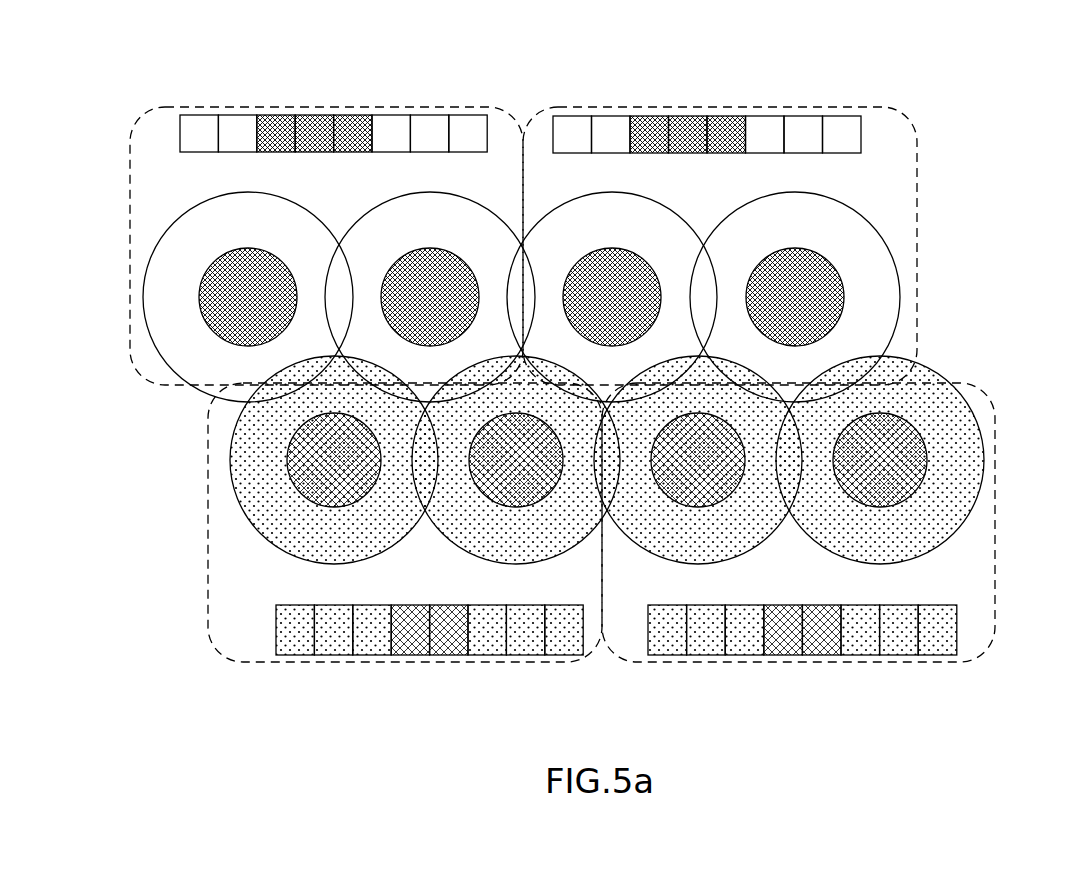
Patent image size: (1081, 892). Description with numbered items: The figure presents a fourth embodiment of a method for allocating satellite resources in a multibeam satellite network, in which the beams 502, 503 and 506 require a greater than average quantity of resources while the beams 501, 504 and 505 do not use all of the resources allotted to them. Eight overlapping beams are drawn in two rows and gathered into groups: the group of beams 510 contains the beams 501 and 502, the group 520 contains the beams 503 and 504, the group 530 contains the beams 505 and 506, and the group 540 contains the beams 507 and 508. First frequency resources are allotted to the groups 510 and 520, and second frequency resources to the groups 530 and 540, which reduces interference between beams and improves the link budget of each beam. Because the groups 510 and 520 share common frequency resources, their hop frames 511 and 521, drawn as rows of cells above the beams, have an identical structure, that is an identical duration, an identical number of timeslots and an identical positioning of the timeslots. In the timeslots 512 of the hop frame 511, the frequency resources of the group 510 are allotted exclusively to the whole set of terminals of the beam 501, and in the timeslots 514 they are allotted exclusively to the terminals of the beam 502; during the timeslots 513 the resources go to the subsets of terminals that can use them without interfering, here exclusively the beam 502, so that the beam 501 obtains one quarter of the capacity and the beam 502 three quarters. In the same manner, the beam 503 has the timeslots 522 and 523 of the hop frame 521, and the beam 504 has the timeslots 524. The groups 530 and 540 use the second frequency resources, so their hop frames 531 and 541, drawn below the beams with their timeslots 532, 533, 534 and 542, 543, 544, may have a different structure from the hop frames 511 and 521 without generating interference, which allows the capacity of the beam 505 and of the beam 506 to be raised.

The beam 501 is at (278, 196).
The beam 502 is at (460, 196).
The beam 503 is at (640, 196).
The beam 504 is at (822, 196).
The beam 505 is at (362, 560).
The beam 506 is at (512, 565).
The beam 507 is at (714, 563).
The beam 508 is at (896, 565).
The group of beams 510 is at (130, 197).
The hop frame 511 is at (286, 92).
The timeslots 512 is at (180, 101).
The timeslots 513 is at (257, 101).
The timeslots 514 is at (372, 101).
The group of beams 520 is at (917, 183).
The hop frame 521 is at (763, 92).
The timeslots 522 is at (553, 101).
The timeslots 523 is at (630, 101).
The timeslots 524 is at (745, 101).
The group of beams 530 is at (208, 487).
The hop frame 531 is at (369, 673).
The timeslots 532 is at (276, 666).
The timeslots 533 is at (391, 666).
The timeslots 534 is at (468, 666).
The group of beams 540 is at (995, 472).
The hop frame 541 is at (857, 673).
The timeslots 542 is at (648, 666).
The timeslots 543 is at (764, 666).
The timeslots 544 is at (841, 666).